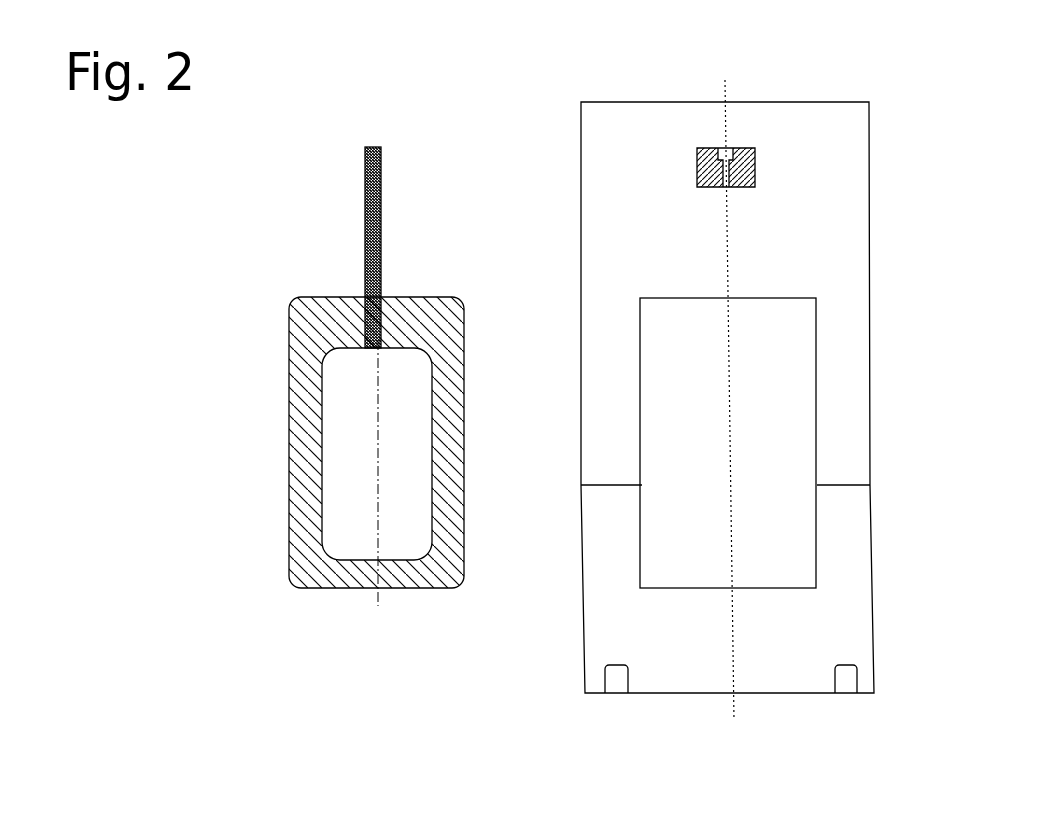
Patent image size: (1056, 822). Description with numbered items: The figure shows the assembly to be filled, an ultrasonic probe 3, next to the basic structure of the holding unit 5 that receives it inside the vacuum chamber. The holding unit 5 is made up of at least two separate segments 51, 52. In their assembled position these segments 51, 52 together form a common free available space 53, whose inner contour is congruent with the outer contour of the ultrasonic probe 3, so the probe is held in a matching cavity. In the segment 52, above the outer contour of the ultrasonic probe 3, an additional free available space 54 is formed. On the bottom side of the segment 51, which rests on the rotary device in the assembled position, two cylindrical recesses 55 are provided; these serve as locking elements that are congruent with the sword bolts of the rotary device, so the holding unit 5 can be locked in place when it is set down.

The ultrasonic probe 3 is at (249, 482).
The holding unit 5 is at (715, 434).
The segment 51 is at (845, 559).
The segment 52 is at (840, 348).
The free available space 53 is at (769, 427).
The additional free available space 54 is at (778, 163).
The cylindrical recesses 55 is at (616, 682).